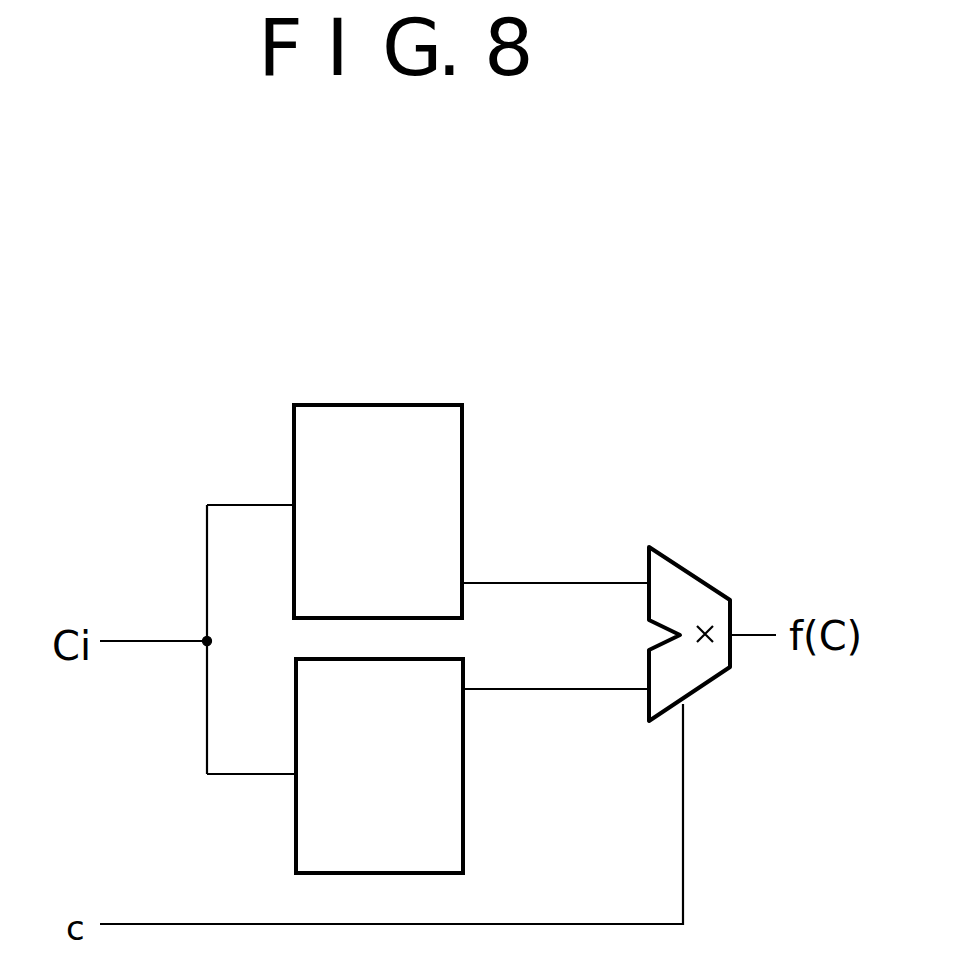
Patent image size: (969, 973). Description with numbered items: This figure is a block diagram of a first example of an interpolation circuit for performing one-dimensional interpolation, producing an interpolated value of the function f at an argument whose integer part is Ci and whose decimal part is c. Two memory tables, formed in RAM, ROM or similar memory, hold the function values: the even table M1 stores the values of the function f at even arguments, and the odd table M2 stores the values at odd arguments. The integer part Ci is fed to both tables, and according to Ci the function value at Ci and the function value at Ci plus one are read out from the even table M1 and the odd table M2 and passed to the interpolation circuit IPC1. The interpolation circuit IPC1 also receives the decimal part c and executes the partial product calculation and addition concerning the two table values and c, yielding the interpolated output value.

The even table M1 is at (463, 527).
The odd table M2 is at (463, 747).
The interpolation circuit IPC1 is at (691, 573).